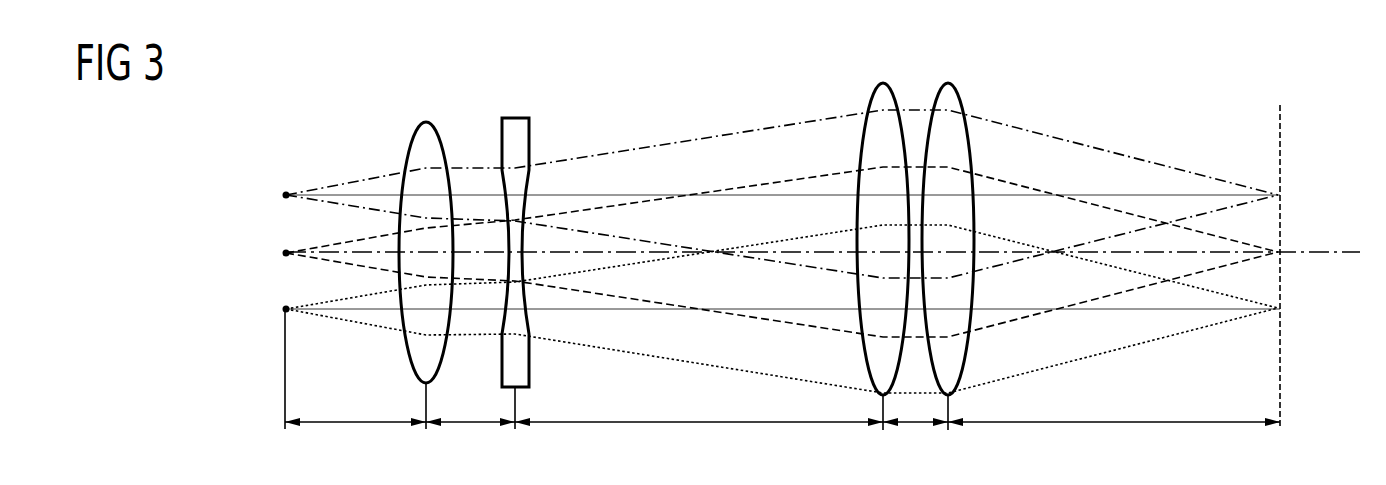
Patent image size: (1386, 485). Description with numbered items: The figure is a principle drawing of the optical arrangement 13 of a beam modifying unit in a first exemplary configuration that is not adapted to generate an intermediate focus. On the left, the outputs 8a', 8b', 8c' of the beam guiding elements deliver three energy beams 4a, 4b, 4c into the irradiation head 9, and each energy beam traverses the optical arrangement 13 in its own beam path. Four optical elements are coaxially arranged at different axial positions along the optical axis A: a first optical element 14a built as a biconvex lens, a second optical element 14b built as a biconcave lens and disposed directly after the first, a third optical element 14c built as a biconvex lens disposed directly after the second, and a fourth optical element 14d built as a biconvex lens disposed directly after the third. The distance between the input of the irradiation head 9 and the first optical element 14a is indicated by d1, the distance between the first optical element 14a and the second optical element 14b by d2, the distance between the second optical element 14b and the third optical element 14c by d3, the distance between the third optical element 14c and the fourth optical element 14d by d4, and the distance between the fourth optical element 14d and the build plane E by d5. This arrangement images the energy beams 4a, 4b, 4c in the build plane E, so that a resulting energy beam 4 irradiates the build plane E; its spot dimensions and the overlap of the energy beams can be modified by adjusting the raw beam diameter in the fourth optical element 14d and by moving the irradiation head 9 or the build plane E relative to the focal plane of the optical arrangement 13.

The resulting energy beam 4 is at (1188, 112).
The energy beam 4a is at (1223, 177).
The energy beam 4b is at (1130, 213).
The energy beam 4c is at (1223, 325).
The output of beam guiding element 8a' is at (253, 193).
The output of beam guiding element 8b' is at (253, 251).
The output of beam guiding element 8c' is at (253, 308).
The irradiation head 9 is at (699, 150).
The optical arrangement 13 is at (700, 108).
The first optical element 14a is at (410, 140).
The second optical element 14b is at (529, 133).
The third optical element 14c is at (870, 100).
The fourth optical element 14d is at (961, 100).
The build plane E is at (1282, 150).
The optical axis A is at (1345, 255).
The distance d1 is at (355, 440).
The distance d2 is at (470, 440).
The distance d3 is at (699, 440).
The distance d4 is at (916, 440).
The distance d5 is at (1114, 440).